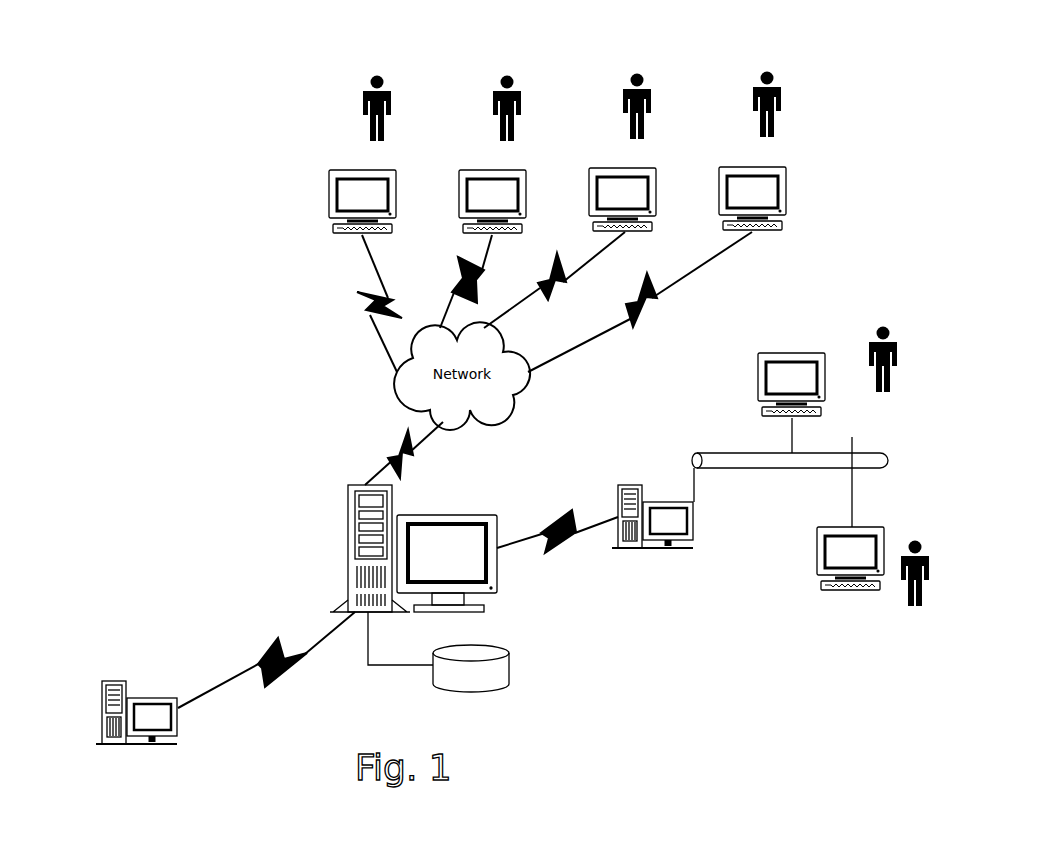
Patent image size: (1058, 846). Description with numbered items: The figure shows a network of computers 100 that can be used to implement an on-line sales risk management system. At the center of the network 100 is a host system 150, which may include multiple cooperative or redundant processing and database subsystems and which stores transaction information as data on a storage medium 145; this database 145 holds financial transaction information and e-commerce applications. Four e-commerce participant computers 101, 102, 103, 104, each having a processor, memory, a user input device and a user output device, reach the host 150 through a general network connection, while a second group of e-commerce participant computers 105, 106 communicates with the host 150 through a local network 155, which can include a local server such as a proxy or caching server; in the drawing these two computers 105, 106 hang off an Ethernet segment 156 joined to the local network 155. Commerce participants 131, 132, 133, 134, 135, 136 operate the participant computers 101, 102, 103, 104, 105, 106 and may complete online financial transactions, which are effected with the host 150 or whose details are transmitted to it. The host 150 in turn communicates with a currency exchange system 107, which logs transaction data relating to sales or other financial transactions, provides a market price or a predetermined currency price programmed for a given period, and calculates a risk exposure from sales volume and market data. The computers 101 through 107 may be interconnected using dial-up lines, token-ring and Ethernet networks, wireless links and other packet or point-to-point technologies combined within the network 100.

The network of computers 100 is at (222, 296).
The e-commerce participant computer 101 is at (362, 201).
The e-commerce participant computer 102 is at (492, 201).
The e-commerce participant computer 103 is at (622, 199).
The e-commerce participant computer 104 is at (752, 198).
The e-commerce participant computer 105 is at (791, 384).
The e-commerce participant computer 106 is at (850, 558).
The currency exchange system 107 is at (125, 703).
The commerce participant 131 is at (357, 65).
The commerce participant 132 is at (487, 62).
The commerce participant 133 is at (620, 58).
The commerce participant 134 is at (755, 57).
The commerce participant 135 is at (903, 355).
The commerce participant 136 is at (905, 610).
The storage medium 145 is at (470, 692).
The host system 150 is at (413, 560).
The local network 155 is at (652, 545).
The Ethernet 156 is at (810, 456).